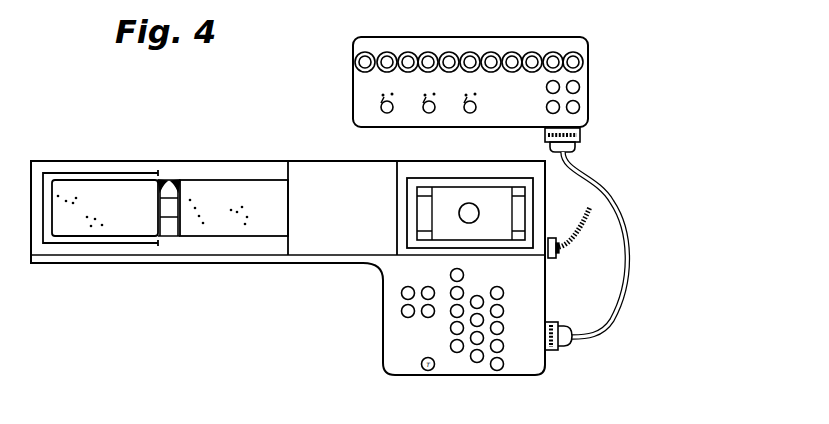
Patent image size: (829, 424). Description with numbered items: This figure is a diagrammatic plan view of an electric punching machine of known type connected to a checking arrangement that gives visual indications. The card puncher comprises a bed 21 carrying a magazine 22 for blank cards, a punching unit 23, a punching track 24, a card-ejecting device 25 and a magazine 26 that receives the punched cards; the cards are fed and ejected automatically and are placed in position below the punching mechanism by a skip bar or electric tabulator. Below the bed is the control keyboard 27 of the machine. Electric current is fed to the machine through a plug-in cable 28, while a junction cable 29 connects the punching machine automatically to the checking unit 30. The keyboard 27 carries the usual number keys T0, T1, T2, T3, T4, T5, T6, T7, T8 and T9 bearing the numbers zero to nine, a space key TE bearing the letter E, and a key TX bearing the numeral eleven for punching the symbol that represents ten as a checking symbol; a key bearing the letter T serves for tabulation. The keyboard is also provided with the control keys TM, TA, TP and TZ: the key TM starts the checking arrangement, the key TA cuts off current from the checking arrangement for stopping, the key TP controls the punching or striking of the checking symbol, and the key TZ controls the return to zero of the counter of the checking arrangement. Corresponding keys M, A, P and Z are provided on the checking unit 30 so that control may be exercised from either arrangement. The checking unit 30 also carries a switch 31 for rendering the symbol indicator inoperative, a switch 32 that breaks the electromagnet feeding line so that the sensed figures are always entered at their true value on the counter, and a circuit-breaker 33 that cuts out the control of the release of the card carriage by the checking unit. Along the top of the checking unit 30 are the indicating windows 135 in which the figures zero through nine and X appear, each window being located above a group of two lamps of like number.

The bed 21 is at (229, 176).
The magazine for blank cards 22 is at (473, 198).
The punching unit 23 is at (340, 183).
The punching track 24 is at (272, 195).
The card-ejecting device 25 is at (168, 190).
The magazine to receive the cards 26 is at (103, 193).
The control keyboard 27 is at (510, 318).
The plug-in cable 28 is at (582, 214).
The junction cable 29 is at (633, 245).
The checking unit 30 is at (492, 52).
The switch 31 is at (387, 114).
The switch 32 is at (429, 114).
The circuit-breaker 33 is at (470, 114).
The indicating windows 135 is at (405, 51).
The key M is at (558, 84).
The key A is at (580, 87).
The key Z is at (580, 107).
The key P is at (557, 110).
The key TA is at (422, 291).
The key TM is at (401, 293).
The key TP is at (401, 311).
The key TZ is at (422, 314).
The key TX is at (481, 297).
The space key TE is at (503, 295).
The panel key 0 T0 is at (501, 317).
The panel key 1 T1 is at (452, 315).
The panel key 2 T2 is at (475, 326).
The panel key 3 T3 is at (500, 334).
The panel key 4 T4 is at (452, 333).
The panel key 5 T5 is at (474, 343).
The panel key 6 T6 is at (500, 352).
The panel key 7 T7 is at (458, 352).
The panel key 8 T8 is at (479, 362).
The panel key 9 T9 is at (500, 370).